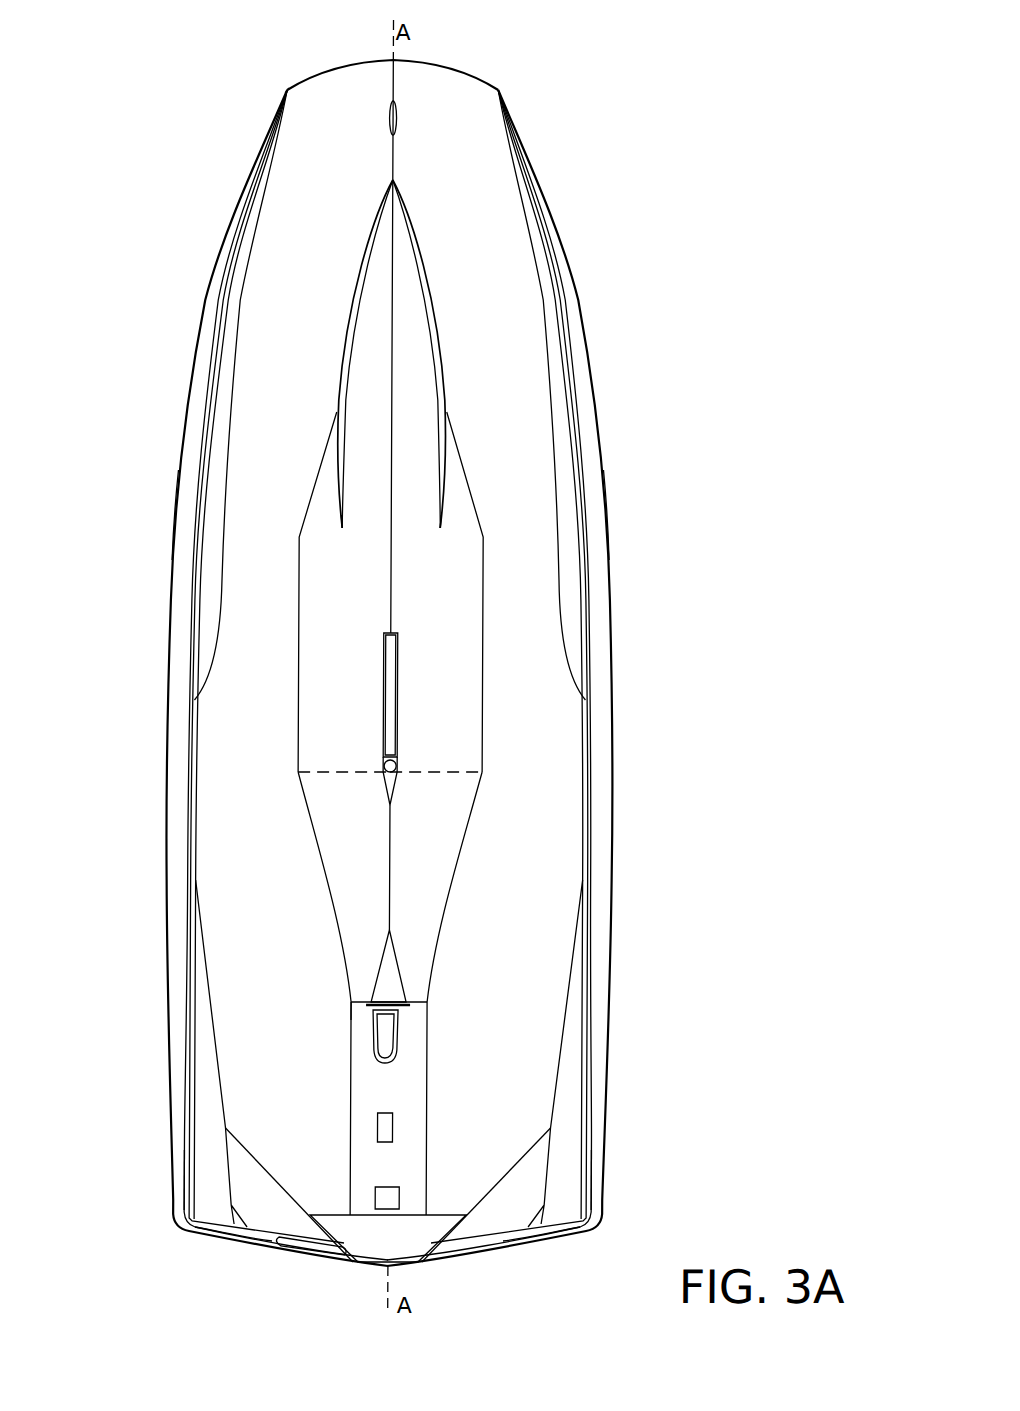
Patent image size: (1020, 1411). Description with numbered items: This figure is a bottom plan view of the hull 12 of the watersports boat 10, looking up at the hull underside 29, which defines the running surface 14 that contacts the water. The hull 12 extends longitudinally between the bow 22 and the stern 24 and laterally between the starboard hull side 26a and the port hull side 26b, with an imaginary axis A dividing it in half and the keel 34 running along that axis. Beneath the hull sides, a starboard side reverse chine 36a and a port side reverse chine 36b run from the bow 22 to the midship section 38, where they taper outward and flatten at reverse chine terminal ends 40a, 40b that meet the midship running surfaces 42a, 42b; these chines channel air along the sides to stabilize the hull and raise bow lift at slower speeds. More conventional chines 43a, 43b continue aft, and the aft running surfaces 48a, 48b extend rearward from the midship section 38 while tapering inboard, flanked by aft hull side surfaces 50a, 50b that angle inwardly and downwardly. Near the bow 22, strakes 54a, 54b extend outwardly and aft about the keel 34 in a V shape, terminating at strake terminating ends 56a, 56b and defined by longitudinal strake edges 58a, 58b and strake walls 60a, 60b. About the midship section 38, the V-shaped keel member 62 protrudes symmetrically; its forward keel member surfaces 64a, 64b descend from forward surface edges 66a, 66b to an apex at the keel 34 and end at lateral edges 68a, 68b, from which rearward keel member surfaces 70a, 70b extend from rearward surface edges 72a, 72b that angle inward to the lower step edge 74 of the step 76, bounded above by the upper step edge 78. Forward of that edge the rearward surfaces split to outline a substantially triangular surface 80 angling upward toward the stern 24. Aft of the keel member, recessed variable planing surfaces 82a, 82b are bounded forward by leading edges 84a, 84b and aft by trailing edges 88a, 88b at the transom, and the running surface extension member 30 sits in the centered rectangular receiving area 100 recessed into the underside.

The watersports boat 10 is at (675, 117).
The hull 12 is at (116, 206).
The running surface 14 is at (684, 400).
The bow 22 is at (433, 56).
The stern 24 is at (363, 1292).
The starboard hull side 26a is at (186, 497).
The port hull side 26b is at (595, 497).
The hull underside 29 is at (274, 104).
The running surface extension member 30 is at (409, 1266).
The keel 34 is at (393, 249).
The starboard side reverse chine 36a is at (212, 334).
The port side reverse chine 36b is at (571, 334).
The midship section 38 is at (704, 488).
The starboard reverse chine terminal end 40a is at (195, 700).
The port reverse chine terminal end 40b is at (586, 700).
The starboard side midship running surface 42a is at (265, 696).
The port side midship running surface 42b is at (547, 696).
The starboard chine 43a is at (212, 1052).
The port chine 43b is at (569, 1046).
The starboard side aft running surface 48a is at (296, 1076).
The port side aft running surface 48b is at (514, 1076).
The starboard aft hull side surface 50a is at (207, 1172).
The port aft hull side surface 50b is at (577, 1173).
The starboard-side strake 54a is at (327, 354).
The port-side strake 54b is at (456, 354).
The starboard strake terminating end 56a is at (342, 534).
The port strake terminating end 56b is at (440, 534).
The starboard longitudinal strake edge 58a is at (338, 322).
The port longitudinal strake edge 58b is at (444, 322).
The starboard longitudinal strake wall 60a is at (345, 362).
The port longitudinal strake wall 60b is at (437, 362).
The V-shaped keel member 62 is at (456, 354).
The starboard side forward keel member surface 64a is at (358, 658).
The port side forward keel member surface 64b is at (468, 658).
The starboard forward surface edge 66a is at (331, 426).
The port forward surface edge 66b is at (451, 426).
The starboard lateral edge 68a is at (355, 778).
The port lateral edge 68b is at (428, 778).
The starboard rearward keel member surface 70a is at (378, 879).
The port rearward keel member surface 70b is at (441, 879).
The starboard rearward keel member surface edge 72a is at (337, 916).
The port rearward keel member surface edge 72b is at (447, 916).
The lower step edge 74 is at (412, 1002).
The step 76 is at (368, 1006).
The upper step edge 78 is at (406, 1013).
The substantially triangular surface 80 is at (407, 994).
The starboard variable planing surface 82a is at (296, 1221).
The port variable planing surface 82b is at (524, 1221).
The starboard leading edge 84a is at (269, 1168).
The port leading edge 84b is at (518, 1168).
The starboard trailing edge 88a is at (259, 1237).
The port trailing edge 88b is at (520, 1227).
The extension member receiving area 100 is at (352, 1252).